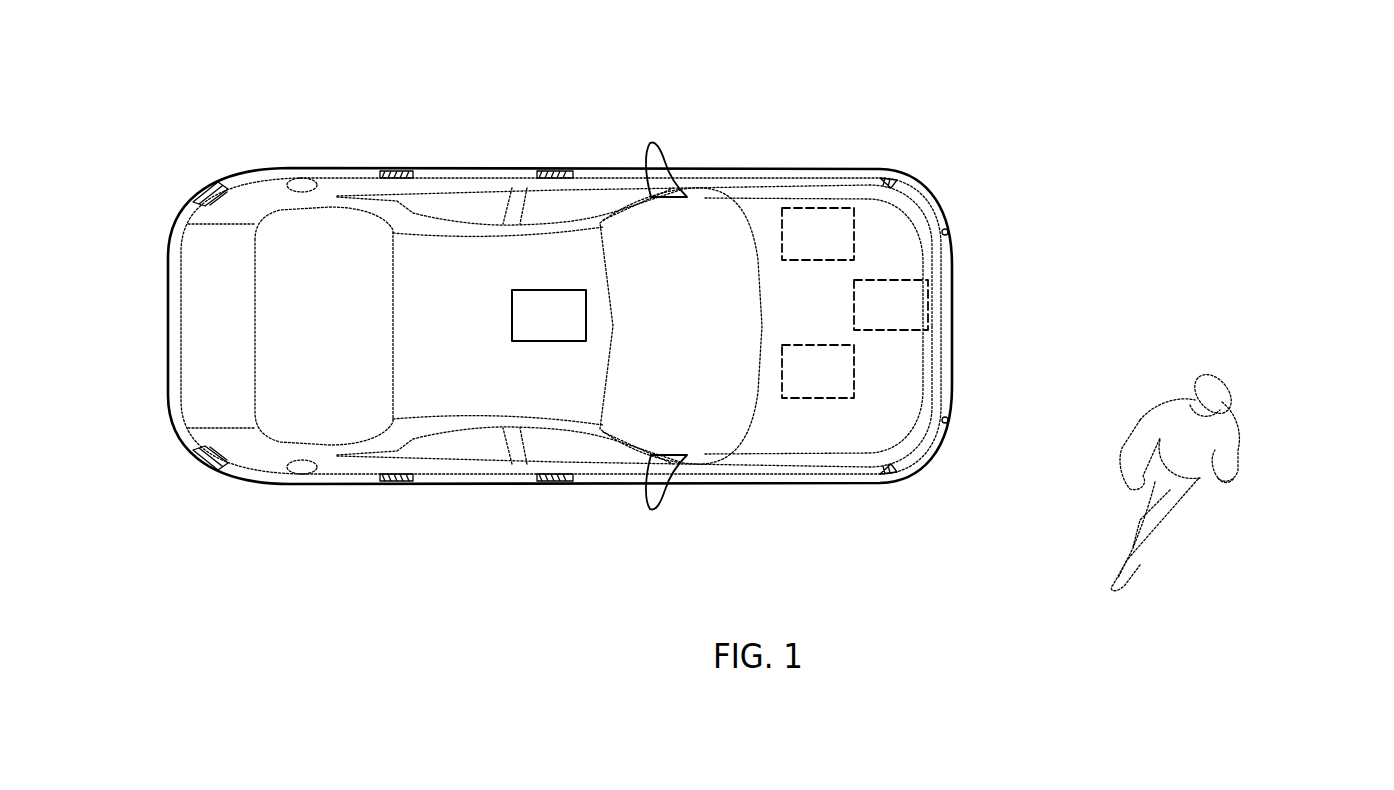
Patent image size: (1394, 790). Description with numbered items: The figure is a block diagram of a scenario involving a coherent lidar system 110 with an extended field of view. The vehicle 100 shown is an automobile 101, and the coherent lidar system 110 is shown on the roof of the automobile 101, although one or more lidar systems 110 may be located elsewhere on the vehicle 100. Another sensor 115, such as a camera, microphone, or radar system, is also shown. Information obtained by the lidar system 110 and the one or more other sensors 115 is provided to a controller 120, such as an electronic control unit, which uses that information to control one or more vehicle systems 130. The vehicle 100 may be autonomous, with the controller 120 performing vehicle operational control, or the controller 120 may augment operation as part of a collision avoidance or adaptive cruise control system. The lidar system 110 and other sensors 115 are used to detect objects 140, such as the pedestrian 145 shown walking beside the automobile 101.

The vehicle 100 is at (560, 291).
The automobile 101 is at (287, 170).
The coherent lidar system 110 is at (572, 330).
The sensor 115 is at (914, 320).
The controller 120 is at (841, 249).
The vehicle systems 130 is at (841, 387).
The object 140 is at (1262, 380).
The pedestrian 145 is at (1233, 466).